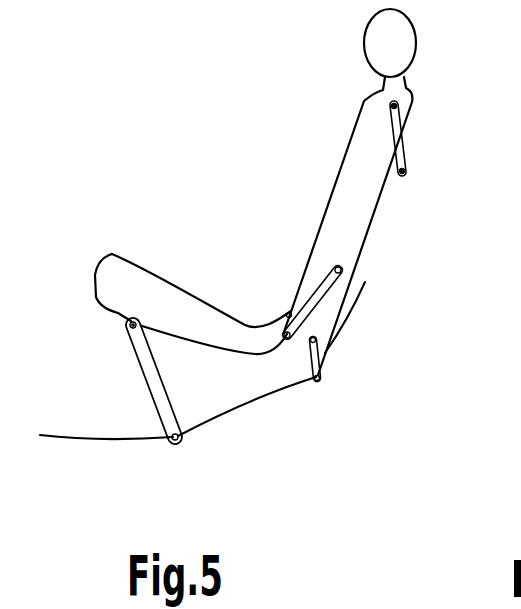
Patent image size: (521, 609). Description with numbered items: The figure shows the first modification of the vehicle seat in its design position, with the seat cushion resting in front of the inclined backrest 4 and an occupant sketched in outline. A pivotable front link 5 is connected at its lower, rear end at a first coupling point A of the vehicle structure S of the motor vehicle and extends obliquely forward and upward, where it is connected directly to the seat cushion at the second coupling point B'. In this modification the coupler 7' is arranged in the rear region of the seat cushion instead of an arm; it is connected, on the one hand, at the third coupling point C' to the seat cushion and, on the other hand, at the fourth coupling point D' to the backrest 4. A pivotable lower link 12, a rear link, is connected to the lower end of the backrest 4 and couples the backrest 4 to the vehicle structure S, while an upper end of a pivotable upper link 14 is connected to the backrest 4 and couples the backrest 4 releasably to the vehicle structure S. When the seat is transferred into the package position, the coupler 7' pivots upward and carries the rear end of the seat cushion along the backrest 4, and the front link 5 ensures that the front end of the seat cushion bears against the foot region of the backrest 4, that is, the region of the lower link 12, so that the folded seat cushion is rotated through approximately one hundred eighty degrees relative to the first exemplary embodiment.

The backrest 4 is at (362, 162).
The upper link 14 is at (408, 126).
The coupler 7' is at (302, 257).
The third coupling point C' is at (236, 281).
The fourth coupling point D' is at (399, 264).
The second coupling point B' is at (79, 302).
The front link 5 is at (147, 367).
The lower link 12 is at (330, 353).
The vehicle structure S is at (298, 442).
The first coupling point A is at (170, 443).